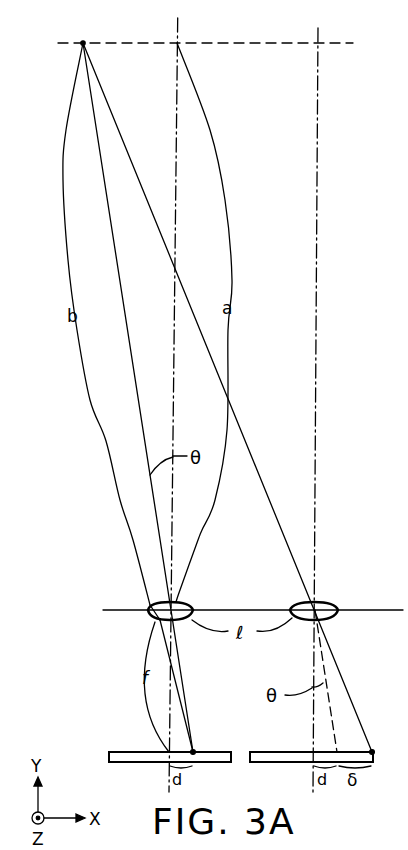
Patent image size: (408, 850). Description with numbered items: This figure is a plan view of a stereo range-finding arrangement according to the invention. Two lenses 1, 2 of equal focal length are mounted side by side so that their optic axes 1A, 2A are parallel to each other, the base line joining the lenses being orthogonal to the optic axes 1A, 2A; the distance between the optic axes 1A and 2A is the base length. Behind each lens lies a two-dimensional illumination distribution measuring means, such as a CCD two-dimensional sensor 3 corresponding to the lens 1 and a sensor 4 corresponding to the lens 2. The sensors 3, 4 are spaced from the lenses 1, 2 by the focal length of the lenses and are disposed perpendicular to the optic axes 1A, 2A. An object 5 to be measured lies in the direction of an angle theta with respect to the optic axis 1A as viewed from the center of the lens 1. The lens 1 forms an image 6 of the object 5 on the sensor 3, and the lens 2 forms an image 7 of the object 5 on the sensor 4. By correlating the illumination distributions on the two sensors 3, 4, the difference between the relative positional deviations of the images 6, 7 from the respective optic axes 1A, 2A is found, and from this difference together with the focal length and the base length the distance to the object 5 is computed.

The lens 1 is at (157, 603).
The lens 2 is at (326, 605).
The two-dimensional illumination distribution measuring means 3 is at (133, 762).
The two-dimensional illumination distribution measuring means 4 is at (282, 762).
The object 5 is at (84, 40).
The image 6 is at (196, 749).
The image 7 is at (374, 749).
The optic axis 1A is at (173, 180).
The optic axis 2A is at (317, 235).